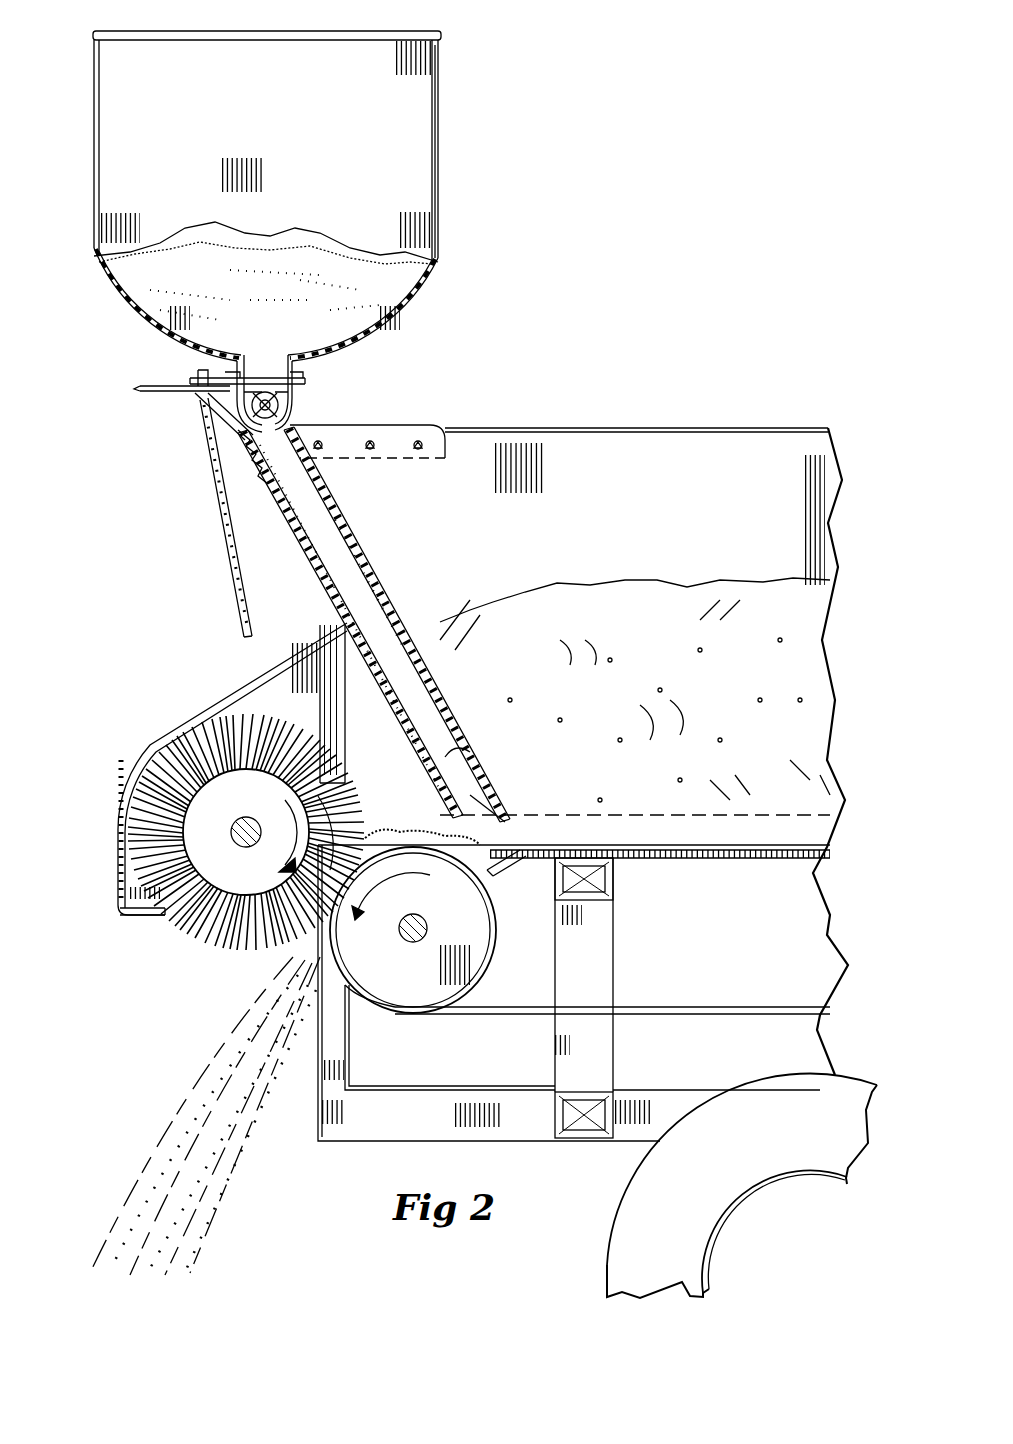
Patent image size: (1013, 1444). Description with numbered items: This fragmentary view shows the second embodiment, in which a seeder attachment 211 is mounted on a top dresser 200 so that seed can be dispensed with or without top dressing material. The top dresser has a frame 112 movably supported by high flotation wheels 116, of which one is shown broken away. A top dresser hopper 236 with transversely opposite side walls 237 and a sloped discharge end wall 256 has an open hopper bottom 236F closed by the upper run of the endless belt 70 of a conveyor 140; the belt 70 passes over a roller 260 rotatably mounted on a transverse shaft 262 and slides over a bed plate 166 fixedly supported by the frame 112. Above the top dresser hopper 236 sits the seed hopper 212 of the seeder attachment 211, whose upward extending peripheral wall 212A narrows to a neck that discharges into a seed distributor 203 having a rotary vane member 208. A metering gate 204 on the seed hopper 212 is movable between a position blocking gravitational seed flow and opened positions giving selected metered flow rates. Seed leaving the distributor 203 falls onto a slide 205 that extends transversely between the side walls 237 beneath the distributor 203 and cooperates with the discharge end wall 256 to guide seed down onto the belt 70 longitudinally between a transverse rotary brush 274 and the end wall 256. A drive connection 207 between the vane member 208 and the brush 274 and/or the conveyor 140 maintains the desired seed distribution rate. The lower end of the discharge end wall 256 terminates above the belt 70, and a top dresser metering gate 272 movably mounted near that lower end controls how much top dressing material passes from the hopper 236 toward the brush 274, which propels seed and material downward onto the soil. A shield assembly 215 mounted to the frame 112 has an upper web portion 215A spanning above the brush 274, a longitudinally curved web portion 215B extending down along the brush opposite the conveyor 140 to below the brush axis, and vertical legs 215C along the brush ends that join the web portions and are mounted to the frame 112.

The seeder attachment 211 is at (455, 70).
The seed hopper 212 is at (94, 56).
The peripheral wall 212A is at (438, 107).
The metering gate 204 is at (190, 375).
The rotary vane member 208 is at (300, 391).
The seed distributor 203 is at (300, 404).
The drive connection 207 is at (213, 486).
The slide 205 is at (302, 512).
The discharge end wall 256 is at (364, 547).
The top dresser metering gate 272 is at (452, 759).
The side walls 237 is at (632, 456).
The top dresser hopper 236 is at (744, 428).
The hopper bottom 236F is at (830, 837).
The bed plate 166 is at (670, 856).
The frame 112 is at (610, 963).
The endless belt 70 is at (505, 1015).
The conveyor 140 is at (387, 1012).
The roller 260 is at (475, 967).
The shaft 262 is at (400, 937).
The top dresser 200 is at (408, 1148).
The shield assembly 215 is at (128, 764).
The upper web portion 215A is at (283, 654).
The web portion 215B is at (130, 915).
The vertical legs 215C is at (338, 723).
The rotary brush 274 is at (196, 949).
The high flotation wheels 116 is at (607, 1266).